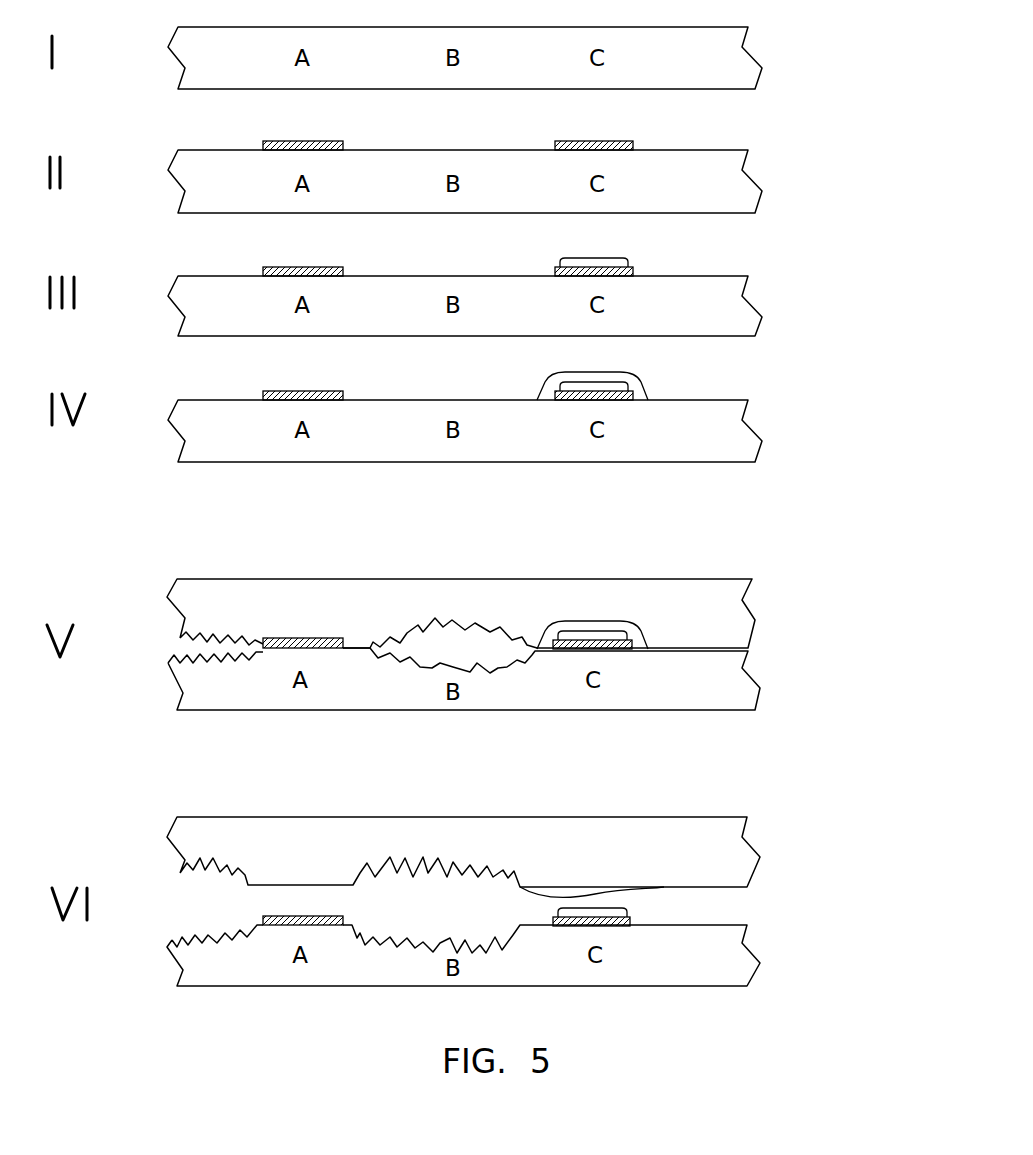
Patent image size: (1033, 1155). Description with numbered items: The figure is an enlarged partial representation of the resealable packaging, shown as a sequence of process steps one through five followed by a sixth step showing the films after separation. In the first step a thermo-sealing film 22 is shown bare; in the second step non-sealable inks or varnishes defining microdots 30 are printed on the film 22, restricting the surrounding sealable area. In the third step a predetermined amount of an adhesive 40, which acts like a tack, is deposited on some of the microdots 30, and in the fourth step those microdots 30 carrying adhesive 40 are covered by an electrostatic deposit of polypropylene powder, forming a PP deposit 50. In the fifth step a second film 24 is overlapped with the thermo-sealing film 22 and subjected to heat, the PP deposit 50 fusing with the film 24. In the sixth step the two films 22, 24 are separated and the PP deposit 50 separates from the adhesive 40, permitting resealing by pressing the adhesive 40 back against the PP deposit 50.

The thermo-sealing film 22 is at (675, 91).
The film 24 is at (268, 577).
The microdots 30 is at (278, 142).
The adhesive 40 is at (598, 258).
The PP deposit 50 is at (573, 372).